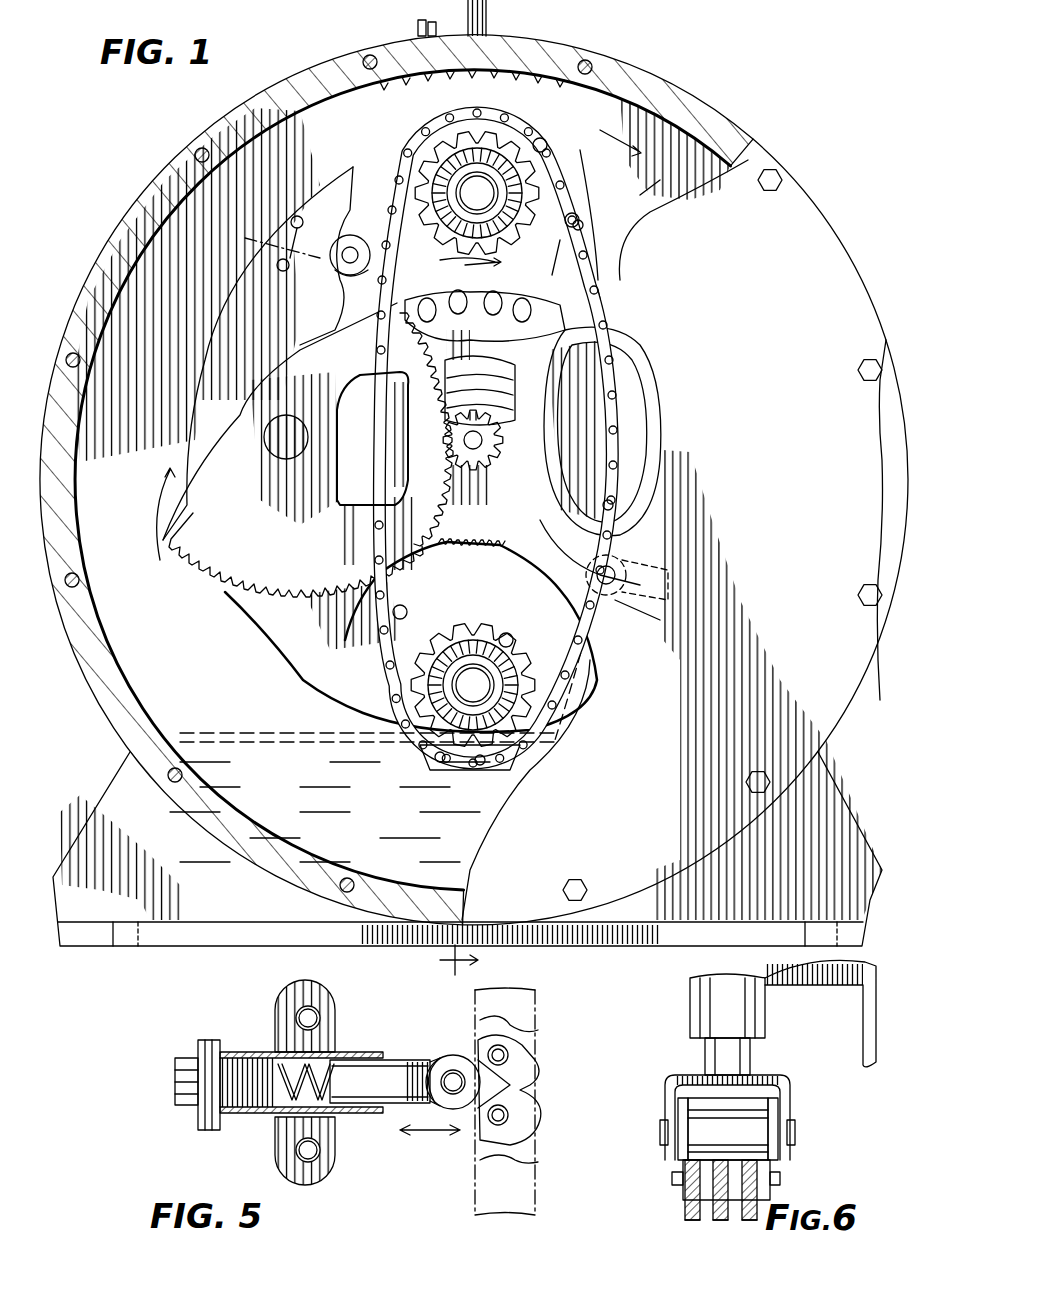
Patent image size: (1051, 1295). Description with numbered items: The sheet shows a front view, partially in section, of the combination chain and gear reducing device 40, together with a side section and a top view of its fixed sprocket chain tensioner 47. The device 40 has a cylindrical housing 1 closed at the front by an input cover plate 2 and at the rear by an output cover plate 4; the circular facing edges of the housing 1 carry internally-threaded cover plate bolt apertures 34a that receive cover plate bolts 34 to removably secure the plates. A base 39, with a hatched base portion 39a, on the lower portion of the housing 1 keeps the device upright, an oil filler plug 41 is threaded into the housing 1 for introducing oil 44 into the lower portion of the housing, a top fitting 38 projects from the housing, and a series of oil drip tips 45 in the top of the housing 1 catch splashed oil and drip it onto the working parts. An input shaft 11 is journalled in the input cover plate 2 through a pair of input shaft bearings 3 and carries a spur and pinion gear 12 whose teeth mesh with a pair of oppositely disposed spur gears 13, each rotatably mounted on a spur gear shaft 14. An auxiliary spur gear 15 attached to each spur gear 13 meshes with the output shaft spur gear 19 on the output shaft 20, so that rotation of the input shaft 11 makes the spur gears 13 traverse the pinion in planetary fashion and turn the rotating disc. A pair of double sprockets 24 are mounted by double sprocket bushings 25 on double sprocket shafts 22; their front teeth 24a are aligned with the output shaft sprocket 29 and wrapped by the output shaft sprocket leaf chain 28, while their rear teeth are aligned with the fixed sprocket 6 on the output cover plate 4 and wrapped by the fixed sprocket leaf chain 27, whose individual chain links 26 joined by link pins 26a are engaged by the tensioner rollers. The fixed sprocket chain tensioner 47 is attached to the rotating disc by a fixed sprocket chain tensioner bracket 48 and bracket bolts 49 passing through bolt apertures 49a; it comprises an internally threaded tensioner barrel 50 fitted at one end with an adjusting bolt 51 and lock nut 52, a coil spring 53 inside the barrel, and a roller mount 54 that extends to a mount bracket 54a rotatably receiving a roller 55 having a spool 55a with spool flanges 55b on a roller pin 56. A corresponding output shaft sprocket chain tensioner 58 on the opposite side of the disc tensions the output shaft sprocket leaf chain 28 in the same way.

In FIG. 1, the cylindrical housing 1 is at (678, 82).
In FIG. 1, the input cover plate 2 is at (803, 446).
In FIG. 1, the input shaft bearings 3 is at (449, 960).
In FIG. 1, the output cover plate 4 is at (345, 141).
In FIG. 1, the fixed sprocket 6 is at (489, 284).
In FIG. 1, the input shaft 11 is at (505, 470).
In FIG. 1, the spur and pinion gear 12 is at (443, 468).
In FIG. 1, the spur gears 13 is at (507, 450).
In FIG. 1, the spur gear shaft 14 is at (650, 440).
In FIG. 1, the auxiliary spur gear 15 is at (376, 520).
In FIG. 1, the output shaft spur gear 19 is at (378, 385).
In FIG. 1, the output shaft 20 is at (447, 420).
In FIG. 1, the double sprocket shaft 22 is at (491, 204).
In FIG. 1, the double sprockets 24 is at (435, 150).
In FIG. 1, the front teeth 24a is at (548, 150).
In FIG. 1, the double sprocket bushing 25 is at (500, 238).
In FIG. 1, the chain links 26 is at (615, 530).
In FIG. 5, the chain links 26 is at (512, 1088).
In FIG. 1, the link pin 26a is at (575, 222).
In FIG. 5, the link pin 26a is at (510, 1050).
In FIG. 6, the link pin 26a is at (672, 1178).
In FIG. 5, the fixed sprocket leaf chain 27 is at (515, 1022).
In FIG. 6, the fixed sprocket leaf chain 27 is at (680, 1213).
In FIG. 1, the output shaft sprocket leaf chain 28 is at (494, 97).
In FIG. 1, the output shaft sprocket 29 is at (450, 300).
In FIG. 1, the cover plate bolts 34 is at (768, 190).
In FIG. 1, the cover plate bolt apertures 34a is at (365, 60).
In FIG. 1, the shaft 38 is at (491, 18).
In FIG. 1, the base 39 is at (120, 790).
In FIG. 1, the base hatched portion 39a is at (135, 898).
In FIG. 1, the combination chain and gear reducing device 40 is at (558, 34).
In FIG. 1, the oil filler plug 41 is at (424, 22).
In FIG. 1, the oil 44 is at (360, 814).
In FIG. 1, the oil drip tips 45 is at (472, 87).
In FIG. 1, the fixed sprocket chain tensioner 47 is at (652, 590).
In FIG. 5, the fixed sprocket chain tensioner 47 is at (195, 1128).
In FIG. 6, the fixed sprocket chain tensioner 47 is at (700, 1015).
In FIG. 5, the fixed sprocket chain tensioner bracket 48 is at (285, 1128).
In FIG. 6, the fixed sprocket chain tensioner bracket 48 is at (840, 975).
In FIG. 1, the bracket bolts 49 is at (292, 225).
In FIG. 5, the bolt apertures 49a is at (318, 1015).
In FIG. 5, the tensioner barrel 50 is at (338, 1052).
In FIG. 6, the tensioner barrel 50 is at (727, 1006).
In FIG. 1, the adjusting bolt 51 is at (245, 238).
In FIG. 5, the adjusting bolt 51 is at (178, 1082).
In FIG. 5, the lock nut 52 is at (210, 1040).
In FIG. 5, the coil spring 53 is at (290, 1062).
In FIG. 5, the roller mount 54 is at (395, 1058).
In FIG. 6, the roller mount 54 is at (747, 1056).
In FIG. 5, the mount bracket 54a is at (432, 1060).
In FIG. 6, the mount bracket 54a is at (668, 1084).
In FIG. 5, the roller 55 is at (465, 1058).
In FIG. 6, the roller 55 is at (750, 1118).
In FIG. 6, the spool 55a is at (770, 1120).
In FIG. 6, the spool flanges 55b is at (678, 1155).
In FIG. 5, the roller pin 56 is at (440, 1082).
In FIG. 6, the roller pin 56 is at (662, 1130).
In FIG. 1, the output shaft sprocket chain tensioner 58 is at (352, 245).